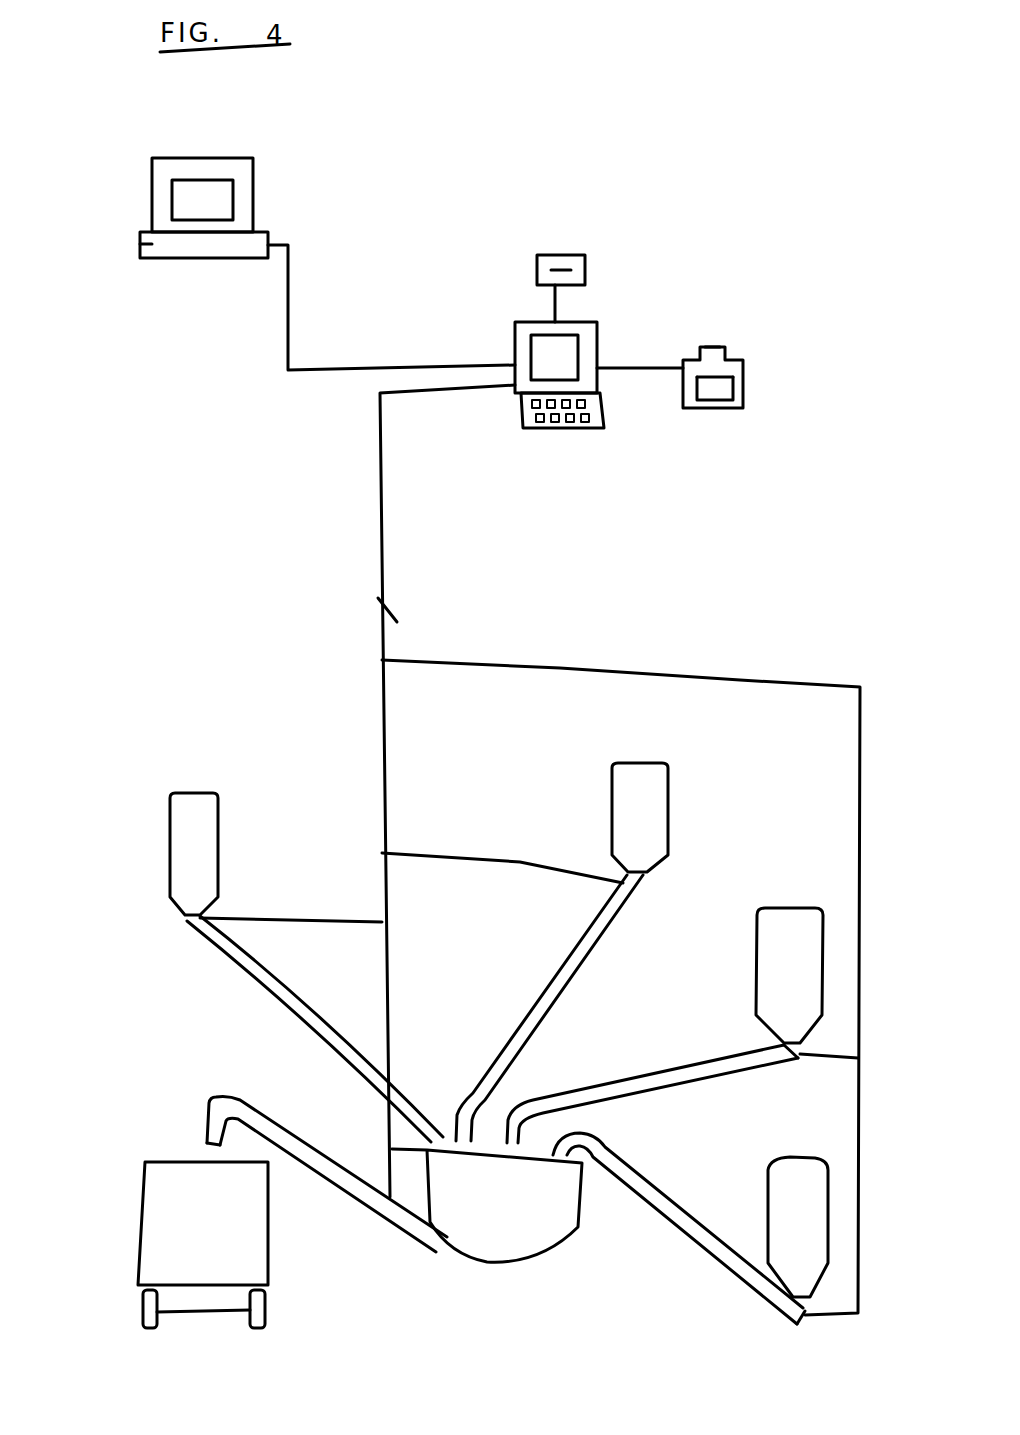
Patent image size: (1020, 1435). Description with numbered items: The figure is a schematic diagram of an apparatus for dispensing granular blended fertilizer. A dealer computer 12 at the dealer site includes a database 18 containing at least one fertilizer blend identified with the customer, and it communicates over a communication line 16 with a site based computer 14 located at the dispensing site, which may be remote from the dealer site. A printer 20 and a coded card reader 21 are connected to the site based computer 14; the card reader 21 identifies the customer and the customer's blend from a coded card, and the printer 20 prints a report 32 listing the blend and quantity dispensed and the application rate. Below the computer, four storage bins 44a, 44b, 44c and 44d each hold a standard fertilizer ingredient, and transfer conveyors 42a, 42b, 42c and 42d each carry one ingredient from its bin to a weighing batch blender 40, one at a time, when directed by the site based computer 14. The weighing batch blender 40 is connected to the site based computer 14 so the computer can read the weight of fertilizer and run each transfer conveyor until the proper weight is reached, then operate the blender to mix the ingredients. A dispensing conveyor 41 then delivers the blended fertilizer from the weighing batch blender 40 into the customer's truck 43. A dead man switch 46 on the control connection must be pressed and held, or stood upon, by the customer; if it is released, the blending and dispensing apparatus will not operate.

The dealer computer 12 is at (253, 175).
The site based computer 14 is at (597, 330).
The communication line 16 is at (290, 297).
The database 18 is at (140, 240).
The printer 20 is at (743, 372).
The coded card reader 21 is at (585, 255).
The report 32 is at (713, 347).
The weighing batch blender 40 is at (520, 1262).
The dispensing conveyor 41 is at (270, 1120).
The transfer conveyor 42a is at (560, 965).
The transfer conveyor 42b is at (678, 1087).
The transfer conveyor 42c is at (700, 1253).
The transfer conveyor 42d is at (315, 1029).
The customer's truck 43 is at (145, 1212).
The storage bin 44a is at (668, 795).
The storage bin 44b is at (757, 965).
The storage bin 44c is at (780, 1157).
The storage bin 44d is at (218, 815).
The dead man switch 46 is at (385, 600).